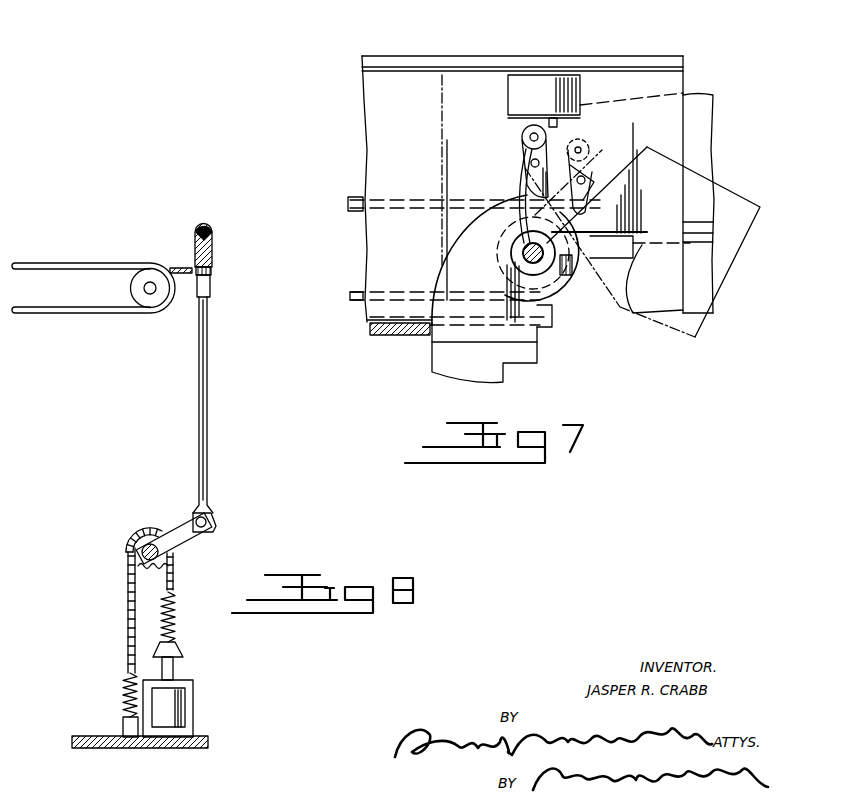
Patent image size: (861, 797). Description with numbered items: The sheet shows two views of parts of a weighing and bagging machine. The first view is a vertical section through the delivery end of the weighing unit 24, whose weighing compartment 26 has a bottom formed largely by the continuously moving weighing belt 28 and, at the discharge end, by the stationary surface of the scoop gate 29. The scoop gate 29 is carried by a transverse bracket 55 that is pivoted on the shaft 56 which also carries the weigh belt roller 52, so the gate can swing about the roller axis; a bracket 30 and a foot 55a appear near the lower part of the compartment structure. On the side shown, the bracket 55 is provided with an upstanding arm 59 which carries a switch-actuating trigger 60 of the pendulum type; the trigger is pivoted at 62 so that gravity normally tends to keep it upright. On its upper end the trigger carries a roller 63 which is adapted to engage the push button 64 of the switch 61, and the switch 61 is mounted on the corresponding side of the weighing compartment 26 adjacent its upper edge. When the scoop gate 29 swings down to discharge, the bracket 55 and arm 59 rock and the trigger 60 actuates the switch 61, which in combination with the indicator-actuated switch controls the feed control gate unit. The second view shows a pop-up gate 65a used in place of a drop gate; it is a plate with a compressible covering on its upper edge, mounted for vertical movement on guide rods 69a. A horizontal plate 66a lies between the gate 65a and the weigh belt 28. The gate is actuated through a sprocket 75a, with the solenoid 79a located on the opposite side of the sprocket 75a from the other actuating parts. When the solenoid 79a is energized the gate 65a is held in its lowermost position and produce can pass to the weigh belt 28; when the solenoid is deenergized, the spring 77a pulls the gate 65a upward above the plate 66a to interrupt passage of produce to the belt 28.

In FIG. 7, the weighing unit 24 is at (338, 68).
In FIG. 7, the weighing compartment 26 is at (421, 80).
In FIG. 7, the weighing belt 28 is at (355, 198).
In FIG. 8, the weighing belt 28 is at (66, 262).
In FIG. 7, the scoop gate 29 is at (697, 97).
In FIG. 7, the bracket 30 is at (528, 350).
In FIG. 7, the weigh belt roller 52 is at (508, 212).
In FIG. 7, the transverse bracket 55 is at (616, 254).
In FIG. 7, the foot 55a is at (426, 337).
In FIG. 7, the shaft 56 is at (562, 292).
In FIG. 7, the upstanding arm 59 is at (518, 188).
In FIG. 7, the switch-actuating trigger 60 is at (522, 137).
In FIG. 7, the switch 61 is at (523, 80).
In FIG. 7, the pivot 62 is at (531, 163).
In FIG. 7, the roller 63 is at (523, 127).
In FIG. 7, the push button 64 is at (557, 128).
In FIG. 8, the pop-up gate 65a is at (212, 255).
In FIG. 8, the horizontal plate 66a is at (172, 268).
In FIG. 8, the guide rods 69a is at (200, 345).
In FIG. 8, the sprocket 75a is at (136, 574).
In FIG. 8, the spring 77a is at (124, 692).
In FIG. 8, the solenoid 79a is at (195, 702).